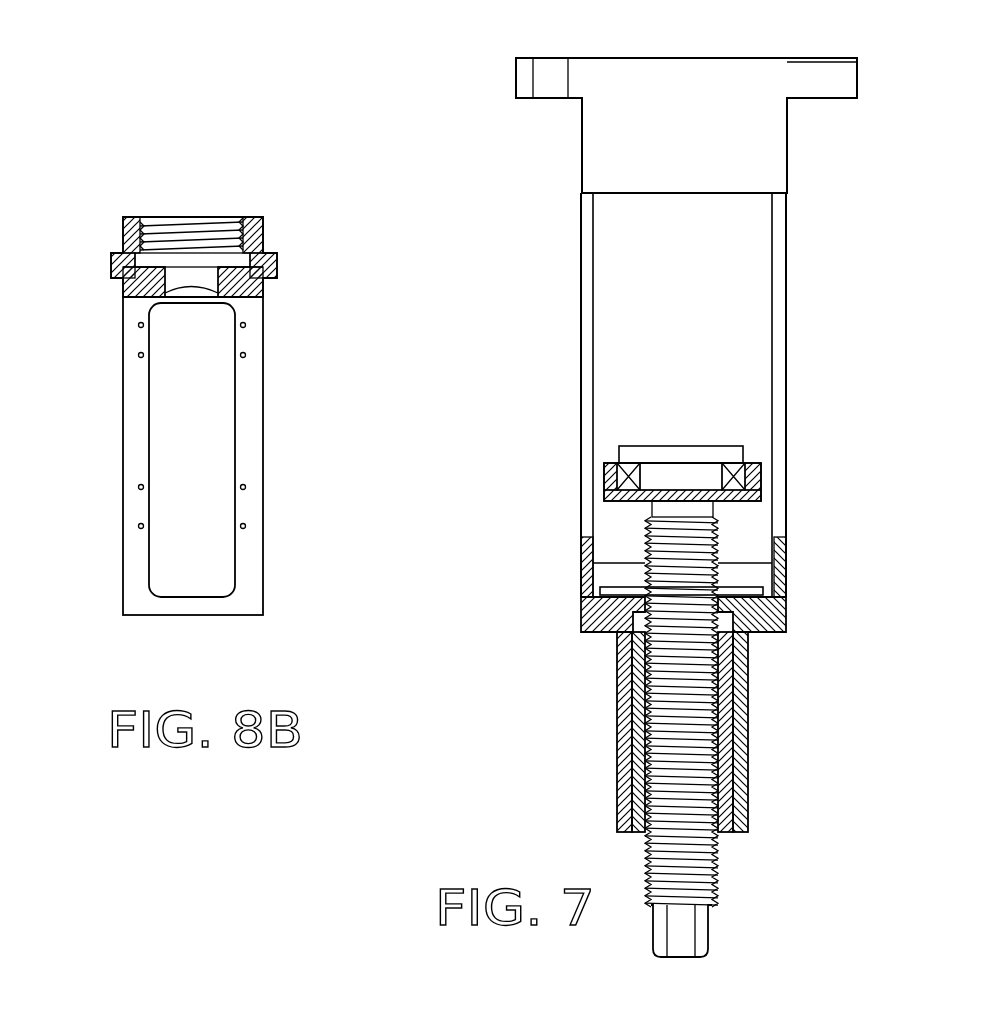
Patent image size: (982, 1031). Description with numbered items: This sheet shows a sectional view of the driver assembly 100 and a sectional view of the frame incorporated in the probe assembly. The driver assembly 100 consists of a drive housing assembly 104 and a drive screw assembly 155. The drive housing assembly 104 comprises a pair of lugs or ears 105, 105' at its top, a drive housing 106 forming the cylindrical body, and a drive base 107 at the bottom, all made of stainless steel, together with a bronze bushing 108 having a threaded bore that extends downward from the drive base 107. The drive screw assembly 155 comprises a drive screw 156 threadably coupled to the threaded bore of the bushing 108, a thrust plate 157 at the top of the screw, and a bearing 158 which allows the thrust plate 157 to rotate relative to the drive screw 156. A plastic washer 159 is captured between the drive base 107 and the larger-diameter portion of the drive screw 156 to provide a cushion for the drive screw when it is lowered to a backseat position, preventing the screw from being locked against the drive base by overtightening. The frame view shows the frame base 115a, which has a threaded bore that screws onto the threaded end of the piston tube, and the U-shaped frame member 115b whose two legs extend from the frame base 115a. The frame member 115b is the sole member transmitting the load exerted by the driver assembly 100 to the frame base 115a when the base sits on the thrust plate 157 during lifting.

In FIG. 7, the driver assembly 100 is at (563, 436).
In FIG. 7, the drive housing assembly 104 is at (581, 292).
In FIG. 7, the lug 105 is at (641, 125).
In FIG. 7, the lug 105' is at (790, 48).
In FIG. 7, the drive housing 106 is at (777, 245).
In FIG. 7, the drive base 107 is at (762, 645).
In FIG. 7, the bronze bushing 108 is at (620, 745).
In FIG. 7, the drive screw assembly 155 is at (728, 519).
In FIG. 7, the drive screw 156 is at (718, 850).
In FIG. 7, the thrust plate 157 is at (690, 455).
In FIG. 7, the bearing 158 is at (735, 463).
In FIG. 7, the plastic washer 159 is at (600, 590).
In FIG. 8B, the frame base 115a is at (135, 217).
In FIG. 8B, the frame member 115b is at (135, 440).